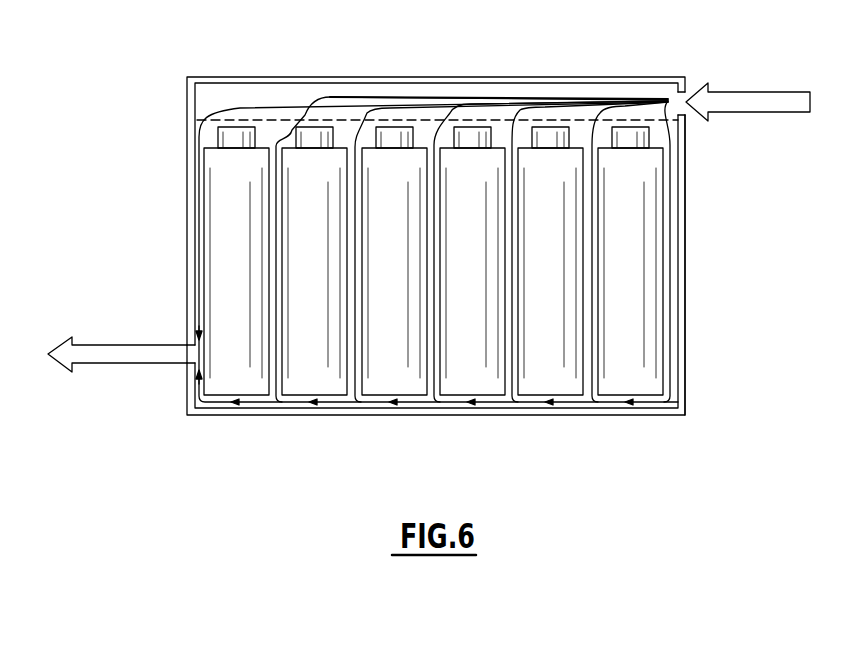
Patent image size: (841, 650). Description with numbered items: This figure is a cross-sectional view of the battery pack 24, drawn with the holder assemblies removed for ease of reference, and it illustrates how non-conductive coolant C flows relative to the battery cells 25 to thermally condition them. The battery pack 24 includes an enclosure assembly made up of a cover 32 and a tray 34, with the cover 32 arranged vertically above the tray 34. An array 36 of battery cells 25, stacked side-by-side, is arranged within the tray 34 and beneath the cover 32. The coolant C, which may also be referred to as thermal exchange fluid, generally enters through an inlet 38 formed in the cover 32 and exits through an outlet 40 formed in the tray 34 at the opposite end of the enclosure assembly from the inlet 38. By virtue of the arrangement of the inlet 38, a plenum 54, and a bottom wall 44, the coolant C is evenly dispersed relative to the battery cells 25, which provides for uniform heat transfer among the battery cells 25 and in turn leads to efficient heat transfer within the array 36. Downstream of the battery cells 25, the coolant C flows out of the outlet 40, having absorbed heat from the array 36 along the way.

The battery pack 24 is at (626, 62).
The battery cells 25 is at (227, 382).
The cover 32 is at (174, 89).
The tray 34 is at (700, 303).
The array 36 is at (683, 246).
The inlet 38 is at (688, 110).
The outlet 40 is at (187, 362).
The bottom wall 44 is at (288, 122).
The plenum 54 is at (503, 93).
The coolant C is at (782, 88).